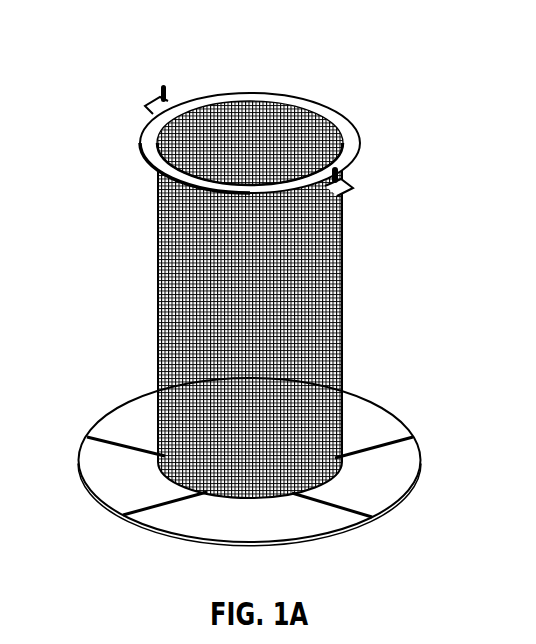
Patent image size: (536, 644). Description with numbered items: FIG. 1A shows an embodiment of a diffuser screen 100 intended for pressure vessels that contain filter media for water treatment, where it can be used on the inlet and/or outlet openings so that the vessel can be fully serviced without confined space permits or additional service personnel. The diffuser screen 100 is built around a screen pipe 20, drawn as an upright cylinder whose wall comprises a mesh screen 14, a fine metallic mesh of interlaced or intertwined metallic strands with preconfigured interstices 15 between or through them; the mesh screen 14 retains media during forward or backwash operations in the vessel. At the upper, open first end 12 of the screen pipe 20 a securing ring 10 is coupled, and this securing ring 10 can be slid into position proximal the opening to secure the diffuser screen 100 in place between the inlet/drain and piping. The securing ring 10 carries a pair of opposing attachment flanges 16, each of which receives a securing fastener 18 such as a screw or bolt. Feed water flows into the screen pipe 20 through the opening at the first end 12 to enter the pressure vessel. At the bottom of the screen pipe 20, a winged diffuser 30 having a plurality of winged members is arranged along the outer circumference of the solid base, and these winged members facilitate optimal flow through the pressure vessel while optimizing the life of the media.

The diffuser screen 100 is at (417, 68).
The securing ring 10 is at (150, 142).
The first end 12 is at (365, 147).
The mesh screen 14 is at (342, 270).
The interstices 15 is at (320, 347).
The attachment flange 16 is at (153, 102).
The securing fastener 18 is at (166, 92).
The screen pipe 20 is at (158, 298).
The winged diffuser 30 is at (97, 462).